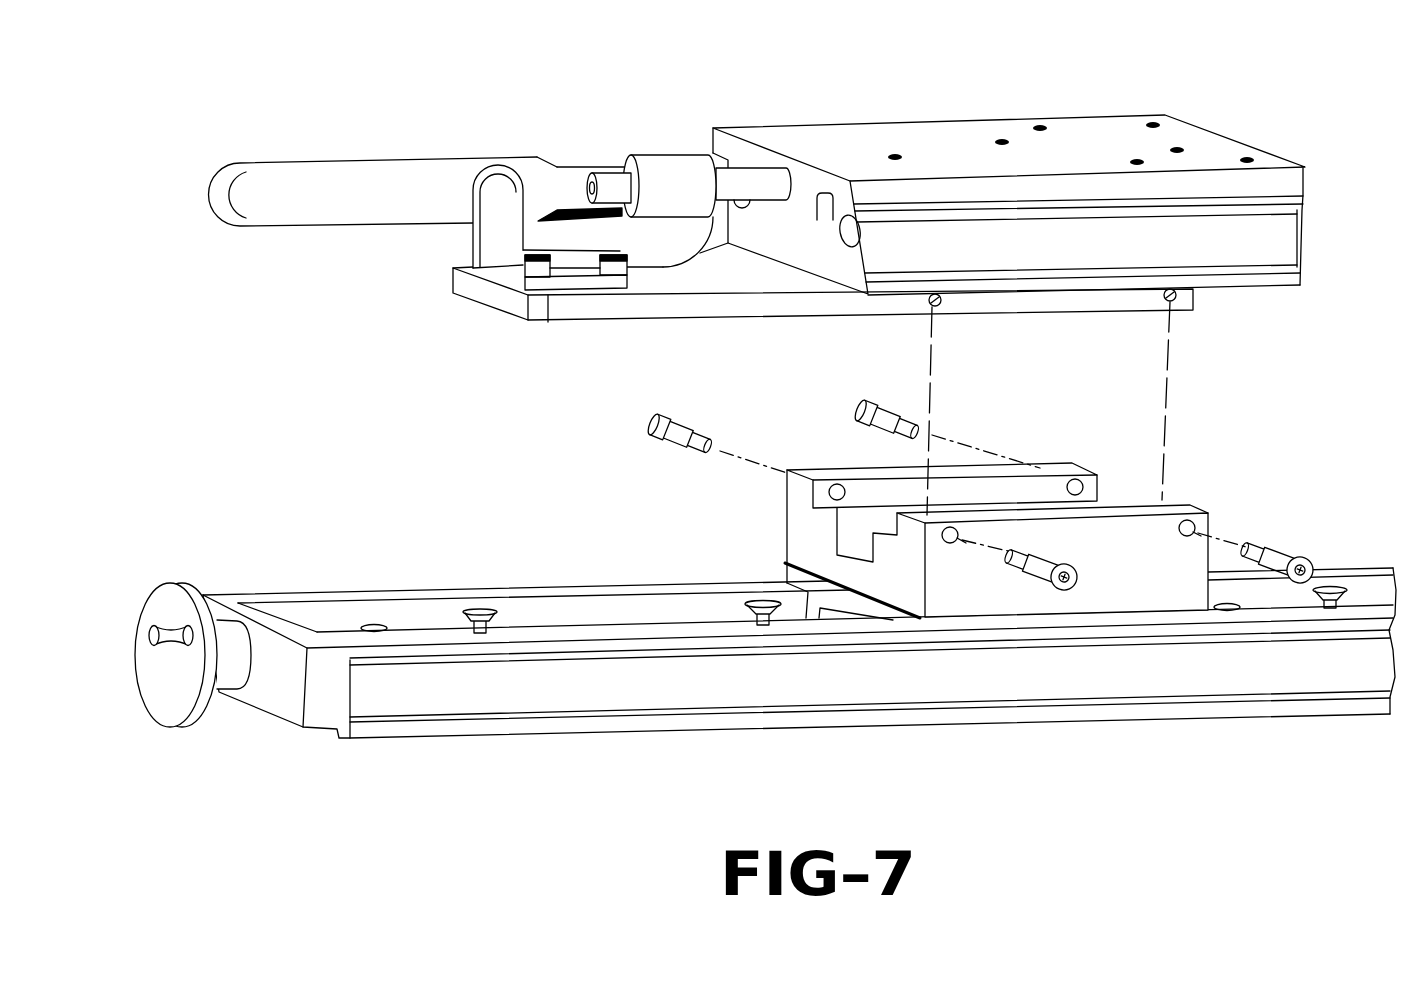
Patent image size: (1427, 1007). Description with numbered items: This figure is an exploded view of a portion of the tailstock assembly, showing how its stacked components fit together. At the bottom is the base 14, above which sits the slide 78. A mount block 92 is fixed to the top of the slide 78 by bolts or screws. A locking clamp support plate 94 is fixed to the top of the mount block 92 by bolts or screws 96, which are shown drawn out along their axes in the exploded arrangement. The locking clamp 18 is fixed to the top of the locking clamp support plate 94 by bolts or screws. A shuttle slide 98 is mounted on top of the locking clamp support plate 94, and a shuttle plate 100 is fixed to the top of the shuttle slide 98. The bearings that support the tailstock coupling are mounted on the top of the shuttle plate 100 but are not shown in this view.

The base 14 is at (493, 692).
The locking clamp 18 is at (293, 202).
The slide 78 is at (837, 600).
The mount block 92 is at (970, 587).
The locking clamp support plate 94 is at (572, 310).
The bolts or screws 96 is at (1273, 557).
The shuttle slide 98 is at (1235, 248).
The shuttle plate 100 is at (1080, 140).